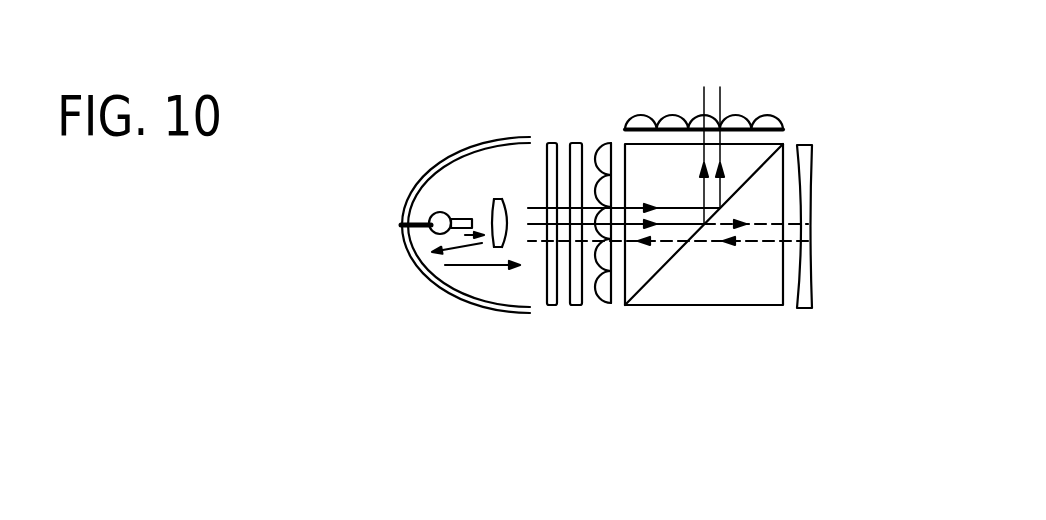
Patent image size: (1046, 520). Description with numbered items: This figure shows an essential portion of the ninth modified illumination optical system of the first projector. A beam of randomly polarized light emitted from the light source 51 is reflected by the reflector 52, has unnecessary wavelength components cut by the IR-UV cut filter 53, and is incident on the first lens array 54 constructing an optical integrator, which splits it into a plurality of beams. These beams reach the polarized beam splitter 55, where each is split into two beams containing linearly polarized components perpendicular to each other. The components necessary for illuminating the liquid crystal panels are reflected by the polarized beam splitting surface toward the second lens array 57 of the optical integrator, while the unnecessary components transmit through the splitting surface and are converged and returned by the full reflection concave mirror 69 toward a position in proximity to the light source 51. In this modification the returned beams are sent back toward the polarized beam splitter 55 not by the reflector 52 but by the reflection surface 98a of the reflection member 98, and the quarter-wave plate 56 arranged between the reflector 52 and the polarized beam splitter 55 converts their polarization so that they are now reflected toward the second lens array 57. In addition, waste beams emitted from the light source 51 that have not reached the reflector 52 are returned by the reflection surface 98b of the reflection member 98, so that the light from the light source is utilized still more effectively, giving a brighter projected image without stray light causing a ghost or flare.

The light source 51 is at (432, 216).
The reflector 52 is at (418, 176).
The IR-UV cut filter 53 is at (548, 305).
The first lens array 54 is at (610, 145).
The polarized beam splitter 55 is at (785, 148).
The quarter-wave plate 56 is at (572, 305).
The second lens array 57 is at (768, 117).
The full reflection concave mirror 69 is at (812, 157).
The reflection member 98 is at (486, 134).
The reflection surface 98a is at (512, 210).
The reflection surface 98b is at (490, 212).